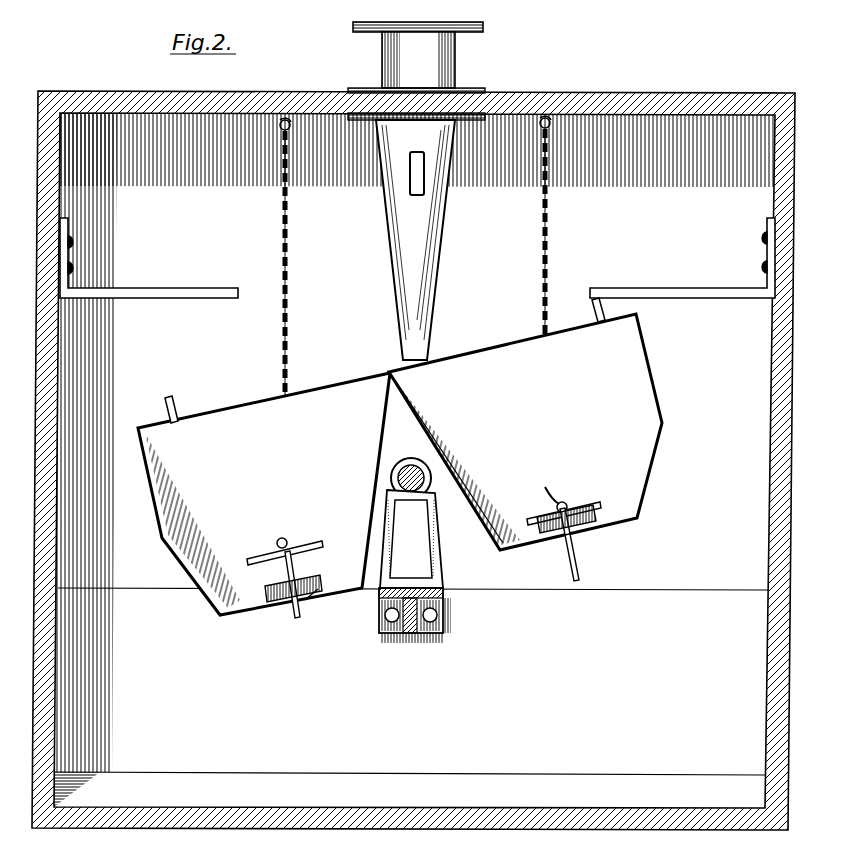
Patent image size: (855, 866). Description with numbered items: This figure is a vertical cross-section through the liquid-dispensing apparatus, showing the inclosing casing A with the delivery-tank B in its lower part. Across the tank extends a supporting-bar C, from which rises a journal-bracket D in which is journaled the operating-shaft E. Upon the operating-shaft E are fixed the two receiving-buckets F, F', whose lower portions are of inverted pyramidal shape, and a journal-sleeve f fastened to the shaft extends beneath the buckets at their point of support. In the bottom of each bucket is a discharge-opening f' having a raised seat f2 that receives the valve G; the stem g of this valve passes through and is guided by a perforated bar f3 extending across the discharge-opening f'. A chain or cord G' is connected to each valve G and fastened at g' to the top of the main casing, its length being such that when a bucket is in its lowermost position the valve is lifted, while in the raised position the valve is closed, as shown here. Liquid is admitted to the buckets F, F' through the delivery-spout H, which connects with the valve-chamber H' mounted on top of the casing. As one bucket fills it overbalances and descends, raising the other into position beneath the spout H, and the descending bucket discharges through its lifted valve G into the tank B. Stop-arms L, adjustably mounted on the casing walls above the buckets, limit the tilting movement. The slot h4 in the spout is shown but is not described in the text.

The inclosing casing A is at (413, 444).
The delivery-tank B is at (418, 712).
The supporting-bar C is at (443, 595).
The journal-bracket D is at (411, 539).
The operating-shaft E is at (391, 476).
The receiving-bucket F is at (525, 424).
The receiving-bucket F' is at (264, 494).
The journal-sleeve f is at (449, 461).
The discharge-opening f' is at (480, 583).
The raised seat f2 is at (625, 490).
The perforated bar f3 is at (286, 604).
The valve stem g is at (444, 578).
The valve G is at (422, 515).
The chain or cord G' is at (430, 333).
The fastening point of chain g' is at (427, 131).
The delivery-spout H is at (418, 240).
The valve-chamber H' is at (410, 71).
The slot h4 is at (424, 190).
The stop-arm L is at (417, 258).